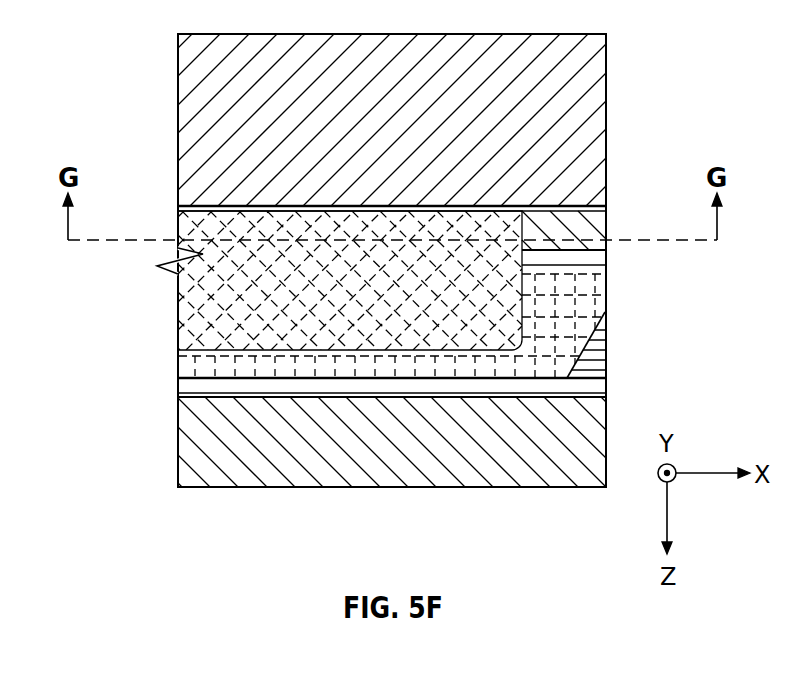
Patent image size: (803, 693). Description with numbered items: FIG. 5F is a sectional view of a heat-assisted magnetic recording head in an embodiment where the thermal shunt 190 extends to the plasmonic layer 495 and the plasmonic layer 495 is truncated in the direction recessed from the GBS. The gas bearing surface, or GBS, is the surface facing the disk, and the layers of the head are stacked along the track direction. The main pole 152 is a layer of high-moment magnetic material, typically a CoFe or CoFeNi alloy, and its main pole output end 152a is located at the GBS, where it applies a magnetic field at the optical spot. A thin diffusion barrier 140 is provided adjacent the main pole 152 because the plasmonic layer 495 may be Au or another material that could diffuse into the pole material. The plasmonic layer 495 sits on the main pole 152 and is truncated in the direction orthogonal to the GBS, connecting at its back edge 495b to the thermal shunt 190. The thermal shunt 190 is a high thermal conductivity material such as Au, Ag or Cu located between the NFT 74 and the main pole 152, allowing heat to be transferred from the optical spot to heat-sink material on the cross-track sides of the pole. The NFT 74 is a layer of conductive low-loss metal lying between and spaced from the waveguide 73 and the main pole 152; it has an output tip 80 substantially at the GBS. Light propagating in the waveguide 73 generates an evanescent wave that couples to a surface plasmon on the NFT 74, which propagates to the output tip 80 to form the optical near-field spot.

The main pole 152 is at (592, 72).
The gas bearing surface GBS is at (590, 143).
The main pole output end 152a is at (607, 173).
The diffusion barrier 140 is at (585, 206).
The back edge of plasmonic layer 495b is at (522, 228).
The plasmonic layer 495 is at (575, 236).
The NFT output tip 80 is at (580, 328).
The NFT 74 is at (258, 370).
The thermal shunt 190 is at (447, 335).
The waveguide 73 is at (433, 466).